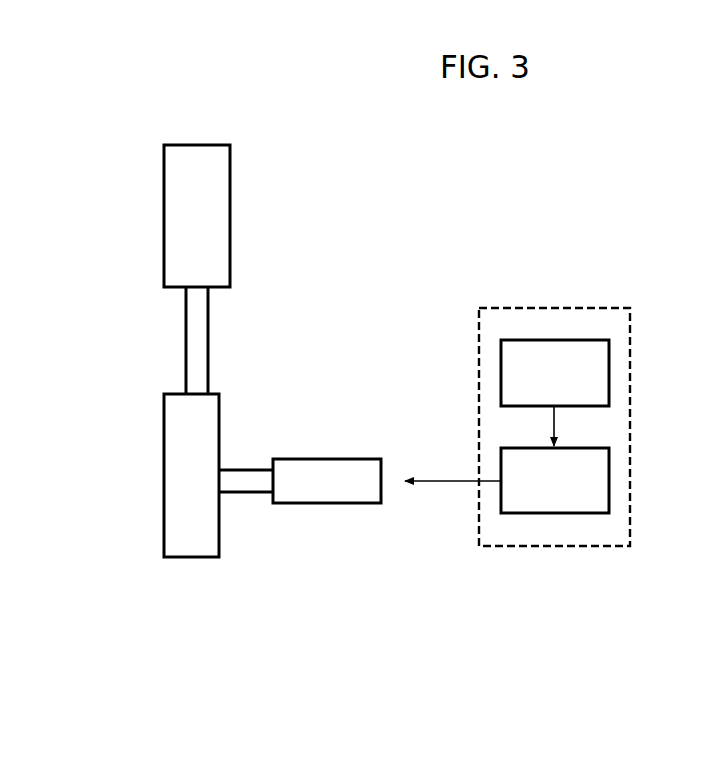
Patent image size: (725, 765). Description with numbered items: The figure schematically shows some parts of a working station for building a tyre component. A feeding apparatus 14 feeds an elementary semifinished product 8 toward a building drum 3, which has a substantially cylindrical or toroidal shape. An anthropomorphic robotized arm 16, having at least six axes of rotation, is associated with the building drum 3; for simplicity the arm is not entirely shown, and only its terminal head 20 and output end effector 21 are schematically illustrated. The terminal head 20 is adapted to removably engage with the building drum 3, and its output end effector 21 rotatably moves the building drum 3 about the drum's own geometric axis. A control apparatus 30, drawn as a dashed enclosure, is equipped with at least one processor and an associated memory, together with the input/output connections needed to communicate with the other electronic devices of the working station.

The building drum 3 is at (162, 494).
The elementary semifinished product 8 is at (210, 349).
The feeding apparatus 14 is at (208, 222).
The anthropomorphic robotized arm 16 is at (337, 526).
The terminal head 20 is at (326, 472).
The output end effector 21 is at (240, 482).
The control apparatus 30 is at (589, 560).